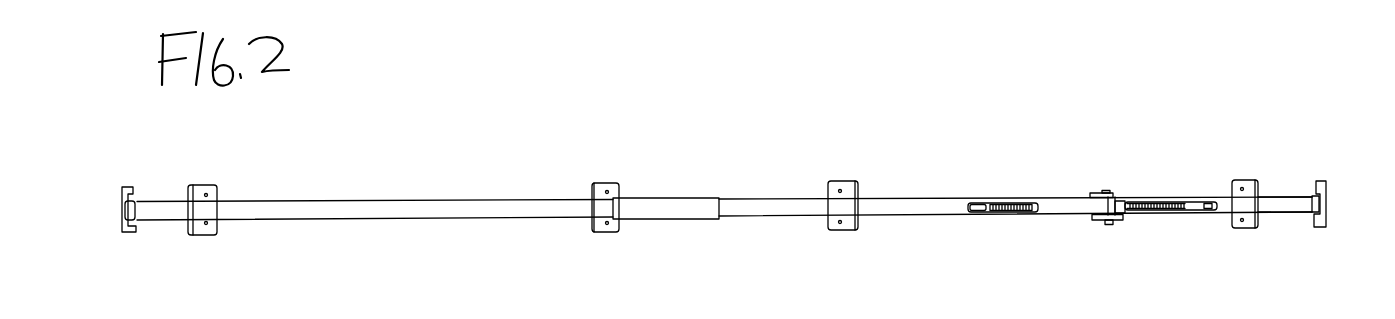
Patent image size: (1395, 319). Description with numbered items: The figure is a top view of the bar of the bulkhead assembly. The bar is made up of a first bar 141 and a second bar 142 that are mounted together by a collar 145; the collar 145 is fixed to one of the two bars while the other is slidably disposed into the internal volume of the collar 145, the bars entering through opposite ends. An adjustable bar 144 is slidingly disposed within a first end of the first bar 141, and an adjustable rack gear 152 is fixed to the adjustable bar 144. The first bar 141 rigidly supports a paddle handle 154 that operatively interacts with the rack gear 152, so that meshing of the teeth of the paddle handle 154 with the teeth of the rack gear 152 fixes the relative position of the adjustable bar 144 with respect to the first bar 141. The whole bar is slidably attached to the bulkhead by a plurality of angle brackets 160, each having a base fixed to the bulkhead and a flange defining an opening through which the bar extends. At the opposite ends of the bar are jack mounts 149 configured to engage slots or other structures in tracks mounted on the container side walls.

The first bar 141 is at (905, 205).
The second bar 142 is at (412, 208).
The adjustable bar 144 is at (1280, 203).
The collar 145 is at (675, 208).
The jack mounts 149 is at (130, 190).
The rack gear 152 is at (1143, 203).
The paddle handle 154 is at (1058, 208).
The angle brackets 160 is at (197, 192).